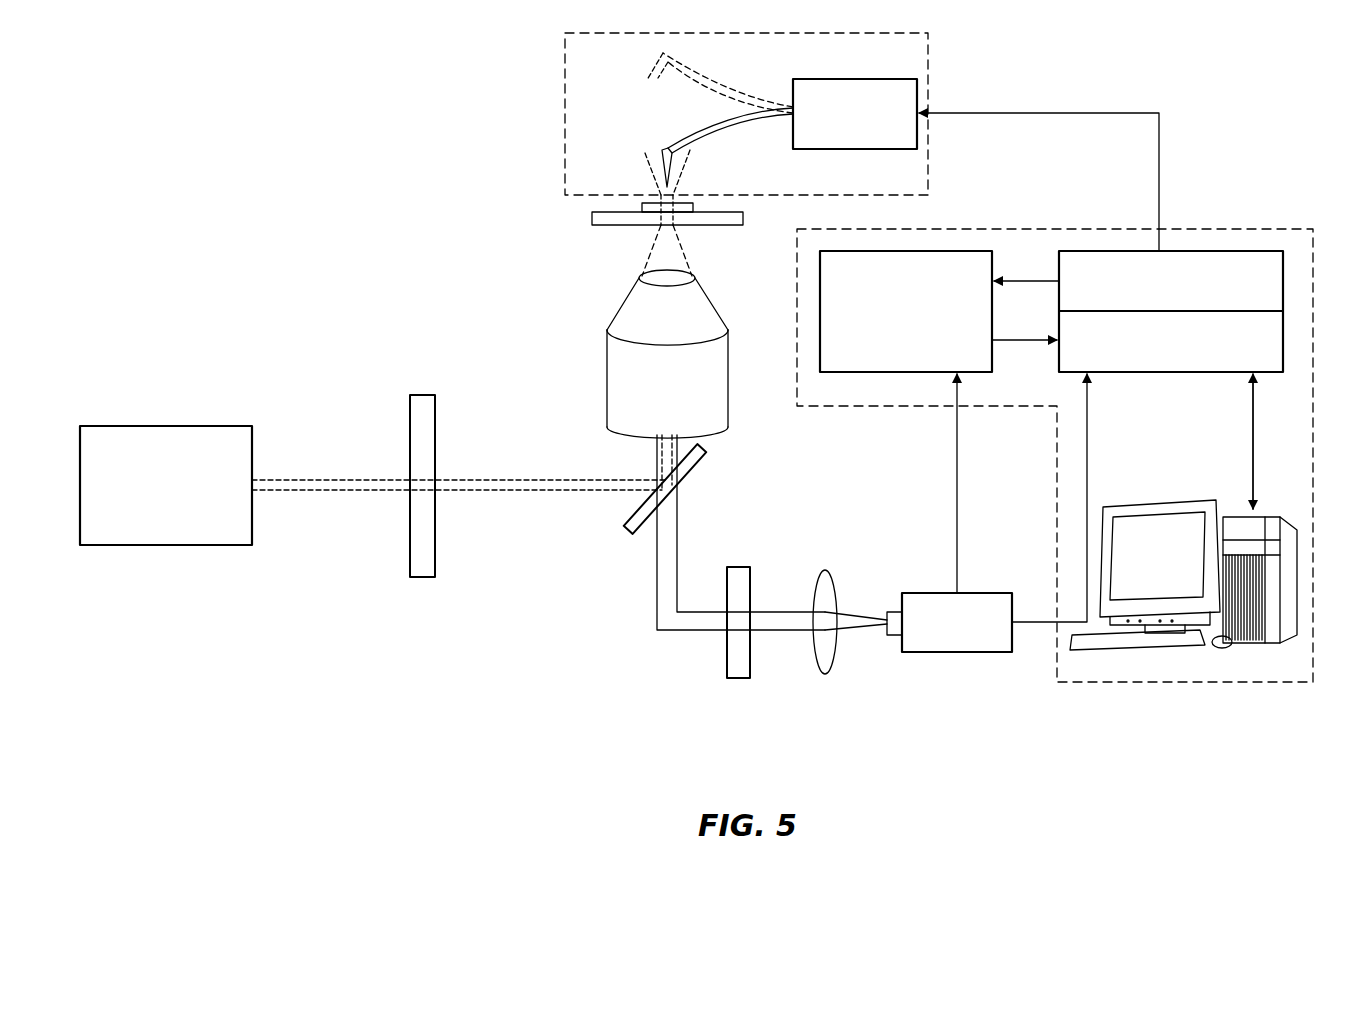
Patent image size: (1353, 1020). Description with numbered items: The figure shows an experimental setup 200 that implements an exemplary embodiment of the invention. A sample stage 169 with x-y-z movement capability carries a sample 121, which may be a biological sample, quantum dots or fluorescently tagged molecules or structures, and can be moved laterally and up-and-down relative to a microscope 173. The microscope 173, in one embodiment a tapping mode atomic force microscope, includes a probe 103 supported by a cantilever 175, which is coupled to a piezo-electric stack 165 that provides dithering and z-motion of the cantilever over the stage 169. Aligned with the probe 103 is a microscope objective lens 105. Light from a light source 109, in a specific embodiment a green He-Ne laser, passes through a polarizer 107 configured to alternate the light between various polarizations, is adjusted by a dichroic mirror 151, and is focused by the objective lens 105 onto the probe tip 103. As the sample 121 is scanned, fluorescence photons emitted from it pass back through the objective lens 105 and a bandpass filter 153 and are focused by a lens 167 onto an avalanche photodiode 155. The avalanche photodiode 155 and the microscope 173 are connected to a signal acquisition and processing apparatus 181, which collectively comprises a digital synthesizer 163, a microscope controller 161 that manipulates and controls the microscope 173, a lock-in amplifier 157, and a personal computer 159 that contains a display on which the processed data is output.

The experimental setup 200 is at (298, 118).
The microscope 173 is at (746, 114).
The cantilever 175 is at (708, 86).
The piezo-electric stack 165 is at (855, 79).
The probe 103 is at (680, 172).
The sample 121 is at (693, 206).
The sample stage 169 is at (590, 217).
The microscope objective lens 105 is at (634, 288).
The dichroic mirror 151 is at (702, 472).
The light source 109 is at (166, 485).
The polarizer 107 is at (422, 395).
The bandpass filter 153 is at (752, 583).
The lens 167 is at (835, 588).
The avalanche photodiode 155 is at (963, 655).
The lock-in amplifier 157 is at (906, 311).
The digital synthesizer 163 is at (1171, 281).
The microscope controller 161 is at (1171, 341).
The signal acquisition and processing apparatus 181 is at (1225, 229).
The personal computer 159 is at (1270, 517).